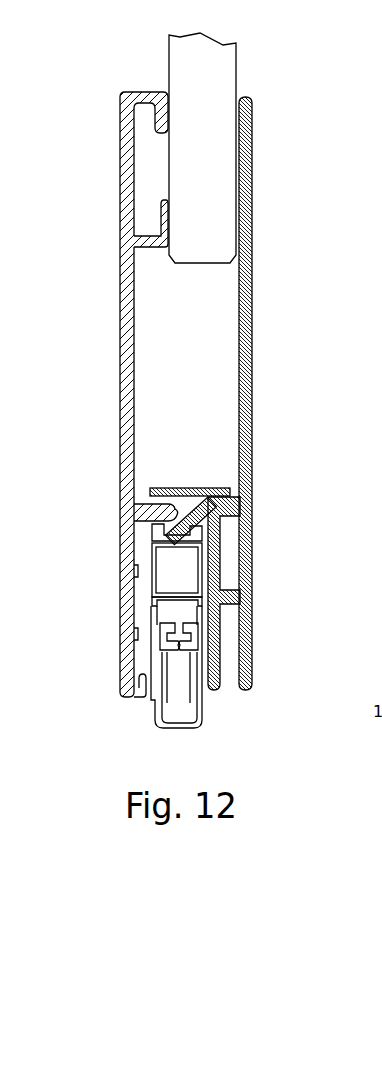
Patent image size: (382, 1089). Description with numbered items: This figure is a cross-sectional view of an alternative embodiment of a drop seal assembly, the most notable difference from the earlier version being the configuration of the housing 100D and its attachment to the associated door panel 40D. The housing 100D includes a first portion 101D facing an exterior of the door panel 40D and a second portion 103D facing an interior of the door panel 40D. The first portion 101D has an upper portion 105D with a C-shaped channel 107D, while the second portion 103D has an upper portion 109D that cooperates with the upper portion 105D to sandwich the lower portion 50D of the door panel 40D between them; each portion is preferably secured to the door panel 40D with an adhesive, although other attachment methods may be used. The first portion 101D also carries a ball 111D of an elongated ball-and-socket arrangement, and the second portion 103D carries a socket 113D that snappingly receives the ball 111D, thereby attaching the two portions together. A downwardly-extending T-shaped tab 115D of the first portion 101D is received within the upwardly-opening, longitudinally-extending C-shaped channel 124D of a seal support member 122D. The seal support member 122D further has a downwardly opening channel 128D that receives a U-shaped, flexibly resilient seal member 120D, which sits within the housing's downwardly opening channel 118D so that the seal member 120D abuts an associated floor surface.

The door panel 40D is at (240, 71).
The lower portion of the door panel 50D is at (213, 157).
The housing 100D is at (90, 365).
The first portion 101D is at (120, 440).
The second portion 103D is at (253, 373).
The upper portion 105D is at (120, 133).
The C-shaped channel 107D is at (135, 184).
The upper portion 109D is at (252, 124).
The ball 111D is at (200, 500).
The socket 113D is at (203, 500).
The T-shaped tab 115D is at (197, 532).
The downwardly opening channel 118D is at (197, 558).
The seal member 120D is at (158, 713).
The seal support member 122D is at (210, 580).
The channel 124D is at (165, 545).
The downwardly opening channel 128D is at (165, 602).